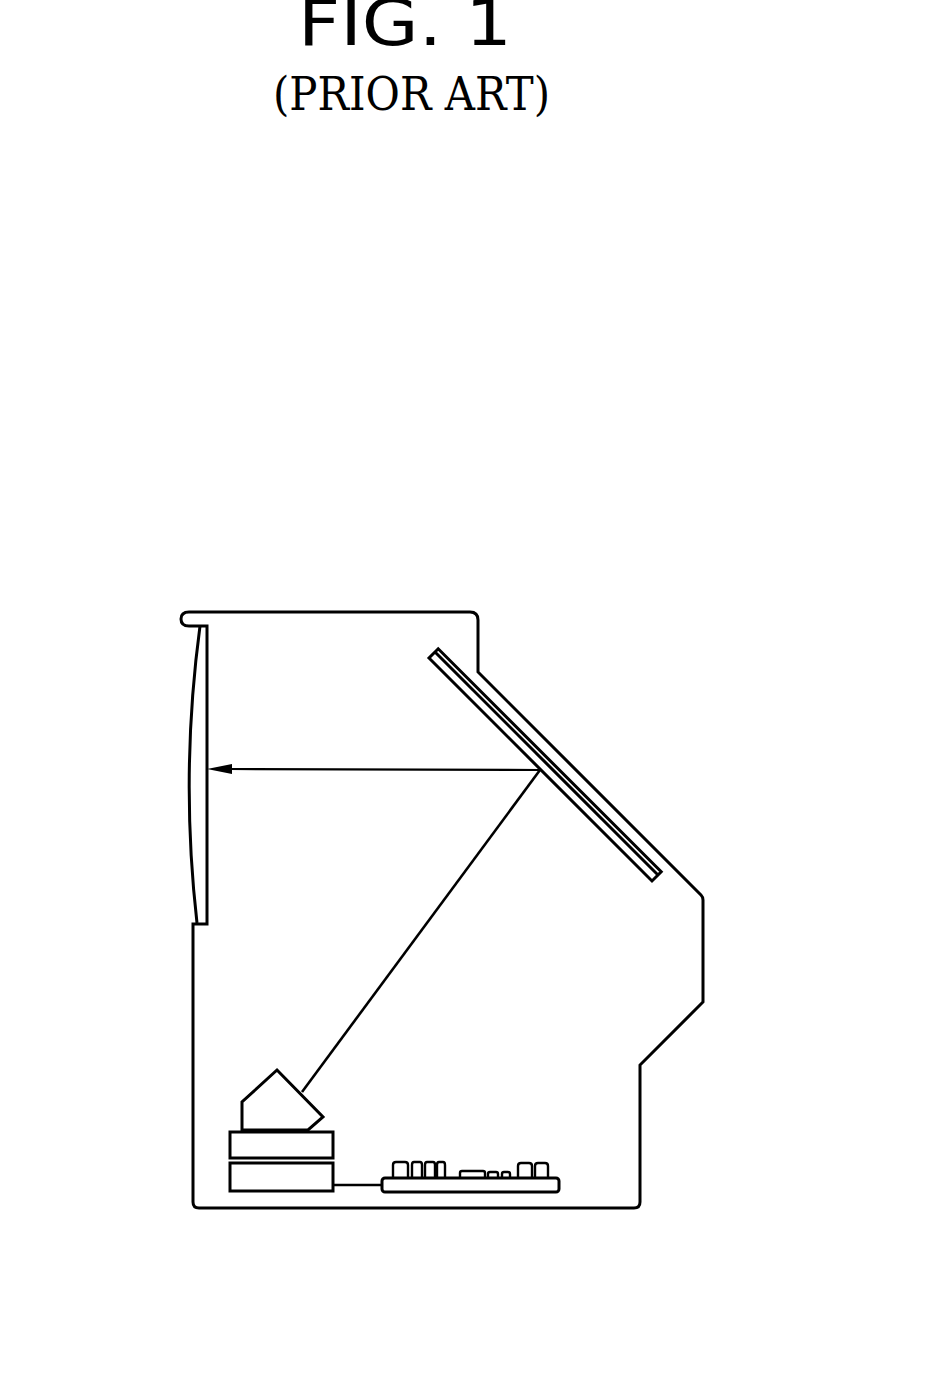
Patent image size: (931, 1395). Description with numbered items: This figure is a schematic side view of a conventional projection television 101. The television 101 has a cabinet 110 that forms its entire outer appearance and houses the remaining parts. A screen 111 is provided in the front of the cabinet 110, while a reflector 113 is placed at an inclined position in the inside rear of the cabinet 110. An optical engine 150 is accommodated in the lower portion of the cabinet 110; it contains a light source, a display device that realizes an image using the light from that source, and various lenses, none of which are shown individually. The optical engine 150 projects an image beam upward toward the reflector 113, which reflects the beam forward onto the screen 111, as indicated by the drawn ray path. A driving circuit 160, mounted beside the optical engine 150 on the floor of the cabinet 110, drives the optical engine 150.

The conventional projection television 101 is at (662, 663).
The cabinet 110 is at (193, 1015).
The screen 111 is at (188, 773).
The reflector 113 is at (647, 857).
The optical engine 150 is at (285, 1182).
The driving circuit 160 is at (472, 1190).